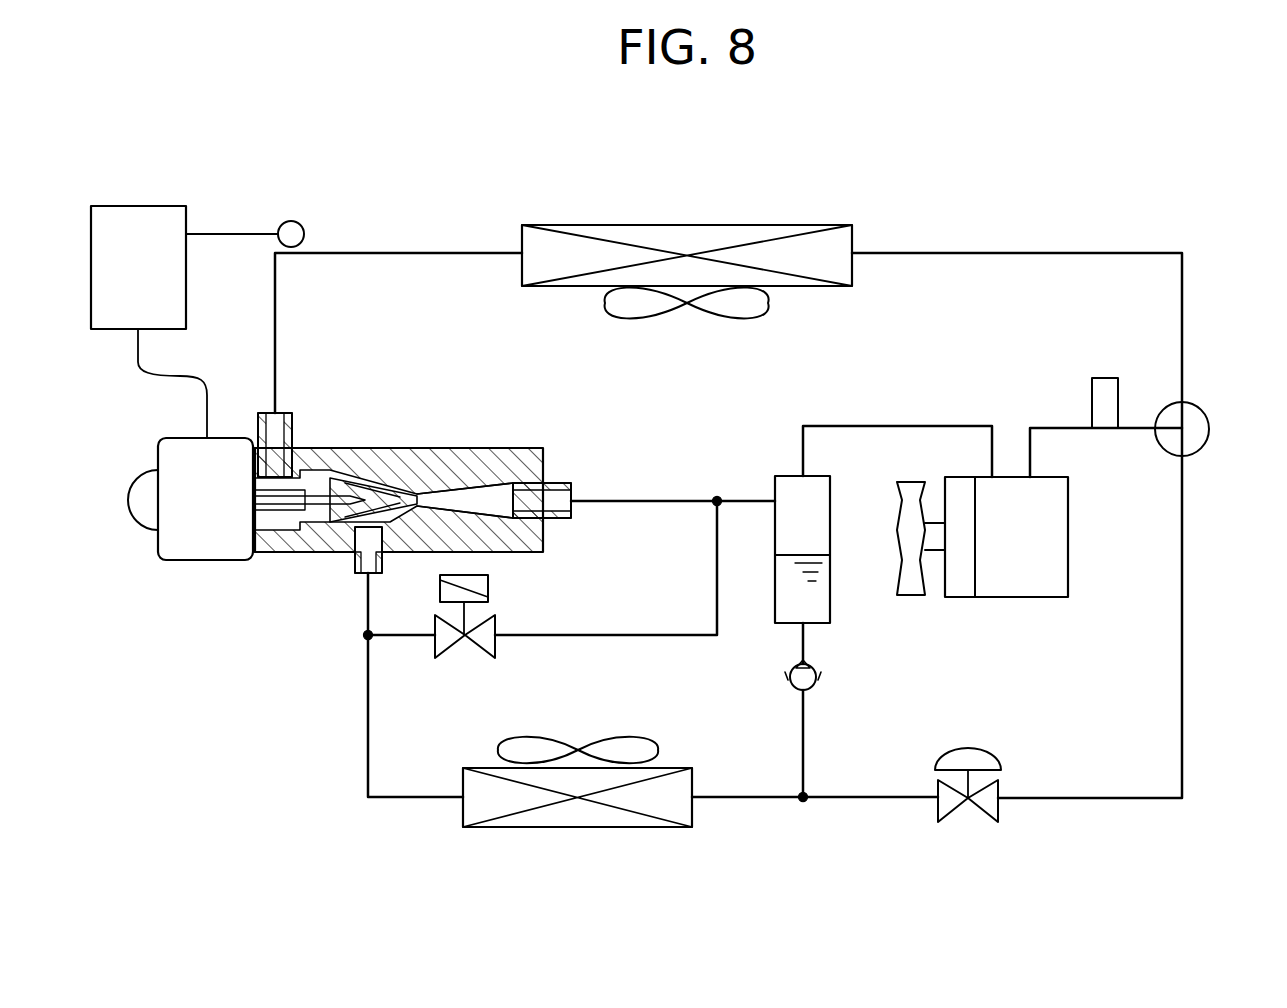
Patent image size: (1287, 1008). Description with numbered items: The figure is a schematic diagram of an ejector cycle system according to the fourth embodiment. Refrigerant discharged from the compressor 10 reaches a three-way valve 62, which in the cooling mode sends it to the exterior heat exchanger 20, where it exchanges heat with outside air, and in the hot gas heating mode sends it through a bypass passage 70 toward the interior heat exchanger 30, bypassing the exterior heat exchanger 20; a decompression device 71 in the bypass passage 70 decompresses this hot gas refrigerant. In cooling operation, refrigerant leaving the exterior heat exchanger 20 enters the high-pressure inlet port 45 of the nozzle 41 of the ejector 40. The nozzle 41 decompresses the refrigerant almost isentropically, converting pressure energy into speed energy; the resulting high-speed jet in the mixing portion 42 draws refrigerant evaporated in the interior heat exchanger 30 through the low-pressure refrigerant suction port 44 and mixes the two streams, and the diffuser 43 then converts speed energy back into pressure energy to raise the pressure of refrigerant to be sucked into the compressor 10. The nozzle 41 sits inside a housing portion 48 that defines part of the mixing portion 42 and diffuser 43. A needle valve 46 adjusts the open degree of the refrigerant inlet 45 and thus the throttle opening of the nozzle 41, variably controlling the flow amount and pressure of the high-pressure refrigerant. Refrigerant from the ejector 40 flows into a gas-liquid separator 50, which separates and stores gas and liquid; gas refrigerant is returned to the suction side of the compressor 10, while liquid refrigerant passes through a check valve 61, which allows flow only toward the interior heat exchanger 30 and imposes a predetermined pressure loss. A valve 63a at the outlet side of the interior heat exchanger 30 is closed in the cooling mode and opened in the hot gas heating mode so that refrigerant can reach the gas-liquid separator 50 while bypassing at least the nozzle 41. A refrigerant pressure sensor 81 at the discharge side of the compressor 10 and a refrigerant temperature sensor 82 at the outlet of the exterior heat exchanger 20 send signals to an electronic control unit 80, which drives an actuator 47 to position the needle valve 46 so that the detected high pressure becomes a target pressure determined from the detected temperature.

The compressor 10 is at (1070, 485).
The exterior heat exchanger 20 is at (752, 225).
The interior heat exchanger 30 is at (680, 768).
The ejector 40 is at (458, 448).
The nozzle 41 is at (378, 465).
The mixing portion 42 is at (432, 490).
The diffuser 43 is at (500, 490).
The low-pressure refrigerant suction port 44 is at (358, 560).
The high-pressure inlet port 45 is at (290, 520).
The needle valve 46 is at (283, 508).
The actuator 47 is at (180, 560).
The housing portion 48 is at (500, 540).
The gas-liquid separator 50 is at (832, 490).
The check valve 61 is at (818, 677).
The three-way valve 62 is at (1209, 414).
The valve 63a is at (495, 640).
The bypass passage 70 is at (1182, 644).
The decompression device 71 is at (1000, 790).
The electronic control unit 80 is at (152, 206).
The refrigerant pressure sensor 81 is at (1105, 378).
The refrigerant temperature sensor 82 is at (296, 222).